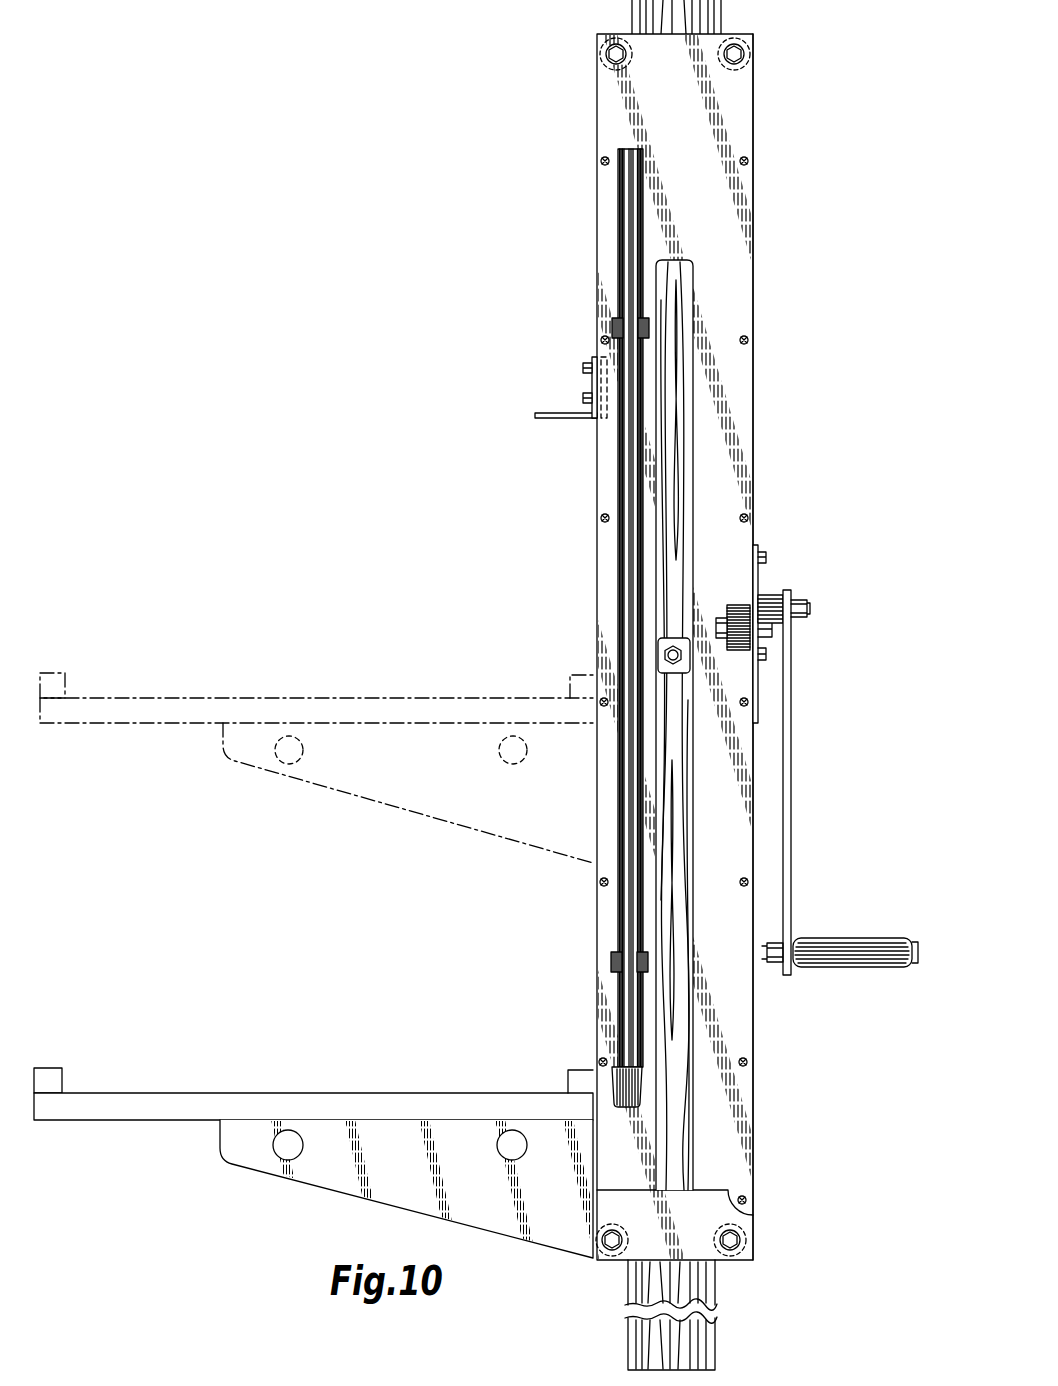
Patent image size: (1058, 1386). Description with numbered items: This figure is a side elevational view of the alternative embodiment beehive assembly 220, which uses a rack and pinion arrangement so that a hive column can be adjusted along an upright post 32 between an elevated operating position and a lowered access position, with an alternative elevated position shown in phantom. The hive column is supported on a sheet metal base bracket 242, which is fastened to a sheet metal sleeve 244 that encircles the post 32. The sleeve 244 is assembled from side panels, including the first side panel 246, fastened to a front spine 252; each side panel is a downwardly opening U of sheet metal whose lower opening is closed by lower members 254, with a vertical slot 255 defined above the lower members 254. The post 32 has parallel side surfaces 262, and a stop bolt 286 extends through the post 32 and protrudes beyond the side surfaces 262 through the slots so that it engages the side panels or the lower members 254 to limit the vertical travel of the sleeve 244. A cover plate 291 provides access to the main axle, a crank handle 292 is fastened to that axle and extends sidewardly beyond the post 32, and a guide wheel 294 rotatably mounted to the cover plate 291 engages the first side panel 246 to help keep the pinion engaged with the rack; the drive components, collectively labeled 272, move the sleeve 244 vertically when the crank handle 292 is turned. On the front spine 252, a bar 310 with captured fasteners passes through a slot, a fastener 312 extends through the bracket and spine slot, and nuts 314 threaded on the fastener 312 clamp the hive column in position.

The upright post 32 is at (632, 21).
The beehive assembly 220 is at (380, 573).
The base bracket 242 is at (330, 795).
The sleeve 244 is at (597, 102).
The first side panel 246 is at (756, 197).
The front spine 252 is at (597, 203).
The lower members 254 is at (713, 1190).
The vertical slot 255 is at (684, 795).
The side surfaces 262 is at (713, 1280).
The crank assembly 272 is at (788, 750).
The stop bolt 286 is at (680, 658).
The cover plate 291 is at (758, 712).
The crank handle 292 is at (792, 855).
The guide wheel 294 is at (737, 606).
The bar with captured fasteners 310 is at (557, 404).
The fastener 312 is at (583, 368).
The nuts 314 is at (591, 355).